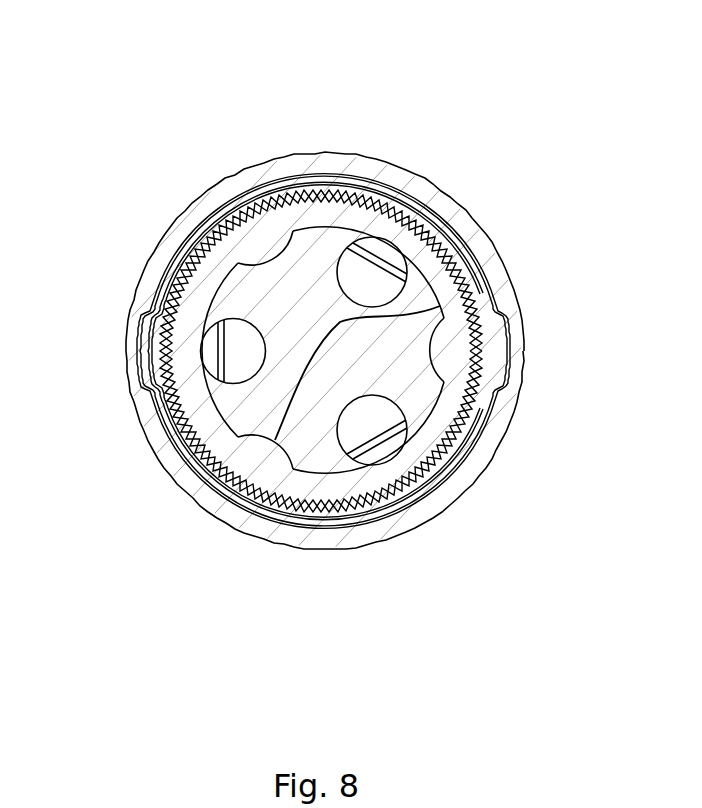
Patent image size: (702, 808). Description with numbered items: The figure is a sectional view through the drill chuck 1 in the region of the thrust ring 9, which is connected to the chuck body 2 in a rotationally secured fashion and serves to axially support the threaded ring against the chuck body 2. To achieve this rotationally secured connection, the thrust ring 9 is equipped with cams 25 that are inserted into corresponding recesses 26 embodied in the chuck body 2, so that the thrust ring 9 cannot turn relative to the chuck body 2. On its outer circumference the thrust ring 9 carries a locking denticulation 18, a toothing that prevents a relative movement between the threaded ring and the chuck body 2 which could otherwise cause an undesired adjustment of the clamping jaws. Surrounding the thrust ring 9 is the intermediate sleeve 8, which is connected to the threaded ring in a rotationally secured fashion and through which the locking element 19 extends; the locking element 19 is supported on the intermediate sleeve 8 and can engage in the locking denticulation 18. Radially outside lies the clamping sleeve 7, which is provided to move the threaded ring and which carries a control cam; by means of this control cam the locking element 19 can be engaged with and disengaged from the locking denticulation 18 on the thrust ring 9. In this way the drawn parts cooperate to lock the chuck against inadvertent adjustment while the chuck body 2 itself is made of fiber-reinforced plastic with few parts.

The drill chuck 1 is at (275, 113).
The chuck body 2 is at (320, 467).
The clamping sleeve 7 is at (142, 408).
The intermediate sleeve 8 is at (216, 222).
The thrust ring 9 is at (390, 470).
The locking denticulation 18 is at (447, 433).
The locking element 19 is at (143, 353).
The cams 25 is at (267, 453).
The recesses 26 is at (430, 308).